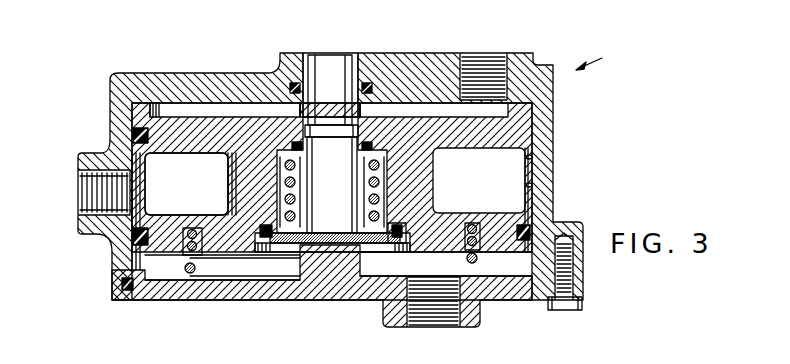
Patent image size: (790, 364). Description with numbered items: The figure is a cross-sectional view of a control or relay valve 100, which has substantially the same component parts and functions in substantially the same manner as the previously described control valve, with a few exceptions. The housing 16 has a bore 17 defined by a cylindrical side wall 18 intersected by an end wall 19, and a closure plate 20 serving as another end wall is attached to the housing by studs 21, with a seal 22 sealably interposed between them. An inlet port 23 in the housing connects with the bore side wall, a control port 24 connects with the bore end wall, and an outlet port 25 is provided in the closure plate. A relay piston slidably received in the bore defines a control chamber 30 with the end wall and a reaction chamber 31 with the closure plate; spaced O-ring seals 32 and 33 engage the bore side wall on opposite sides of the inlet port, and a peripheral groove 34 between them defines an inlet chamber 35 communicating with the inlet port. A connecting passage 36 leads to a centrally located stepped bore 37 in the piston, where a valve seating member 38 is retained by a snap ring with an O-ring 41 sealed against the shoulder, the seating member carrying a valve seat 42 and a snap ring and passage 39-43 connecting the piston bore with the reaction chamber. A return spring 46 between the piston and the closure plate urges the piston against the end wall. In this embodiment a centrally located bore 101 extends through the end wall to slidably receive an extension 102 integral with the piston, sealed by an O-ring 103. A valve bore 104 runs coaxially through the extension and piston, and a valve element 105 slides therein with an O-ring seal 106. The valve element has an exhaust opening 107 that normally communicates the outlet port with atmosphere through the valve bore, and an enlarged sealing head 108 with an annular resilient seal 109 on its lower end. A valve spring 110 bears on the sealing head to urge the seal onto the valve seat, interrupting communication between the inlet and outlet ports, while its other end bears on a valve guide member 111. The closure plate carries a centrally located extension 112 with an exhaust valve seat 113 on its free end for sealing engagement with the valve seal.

The housing 16 is at (547, 98).
The bore 17 is at (530, 158).
The cylindrical side wall 18 is at (530, 185).
The end wall 19 is at (171, 98).
The closure plate 20 is at (183, 288).
The studs 21 is at (584, 300).
The seal 22 is at (129, 291).
The inlet port 23 is at (92, 213).
The control port 24 is at (497, 56).
The outlet port 25 is at (415, 325).
The control chamber 30 is at (222, 110).
The reaction chamber 31 is at (140, 262).
The O-ring seal 32 is at (131, 135).
The O-ring seal 33 is at (131, 238).
The peripheral groove 34 is at (186, 152).
The inlet chamber 35 is at (168, 193).
The connecting passage 36 is at (252, 152).
The stepped bore 37 is at (284, 180).
The valve seating member 38 is at (272, 240).
The snap ring and passage 39-43 is at (222, 265).
The O-ring 41 is at (404, 232).
The valve seat 42 is at (284, 203).
The return spring 46 is at (476, 224).
The control valve 100 is at (607, 56).
The bore 101 is at (312, 58).
The extension 102 is at (366, 76).
The O-ring 103 is at (290, 88).
The valve bore 104 is at (348, 60).
The valve element 105 is at (321, 190).
The O-ring seal 106 is at (373, 146).
The exhaust opening 107 is at (356, 150).
The sealing head 108 is at (398, 226).
The resilient seal 109 is at (335, 231).
The valve spring 110 is at (380, 189).
The valve guide member 111 is at (380, 166).
The extension 112 is at (362, 263).
The exhaust valve seat 113 is at (328, 247).